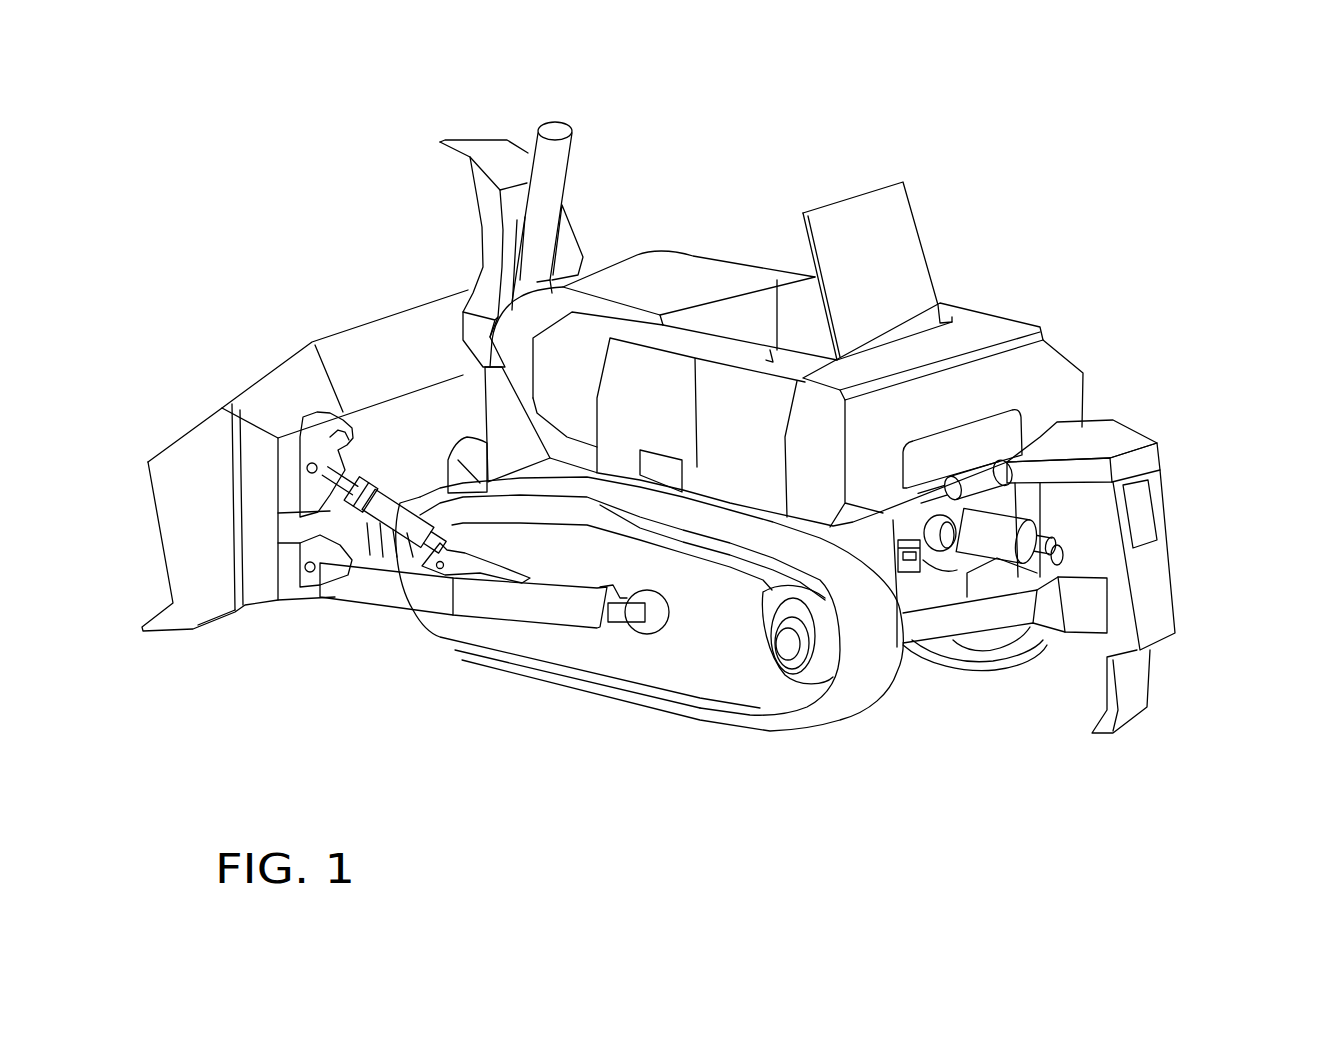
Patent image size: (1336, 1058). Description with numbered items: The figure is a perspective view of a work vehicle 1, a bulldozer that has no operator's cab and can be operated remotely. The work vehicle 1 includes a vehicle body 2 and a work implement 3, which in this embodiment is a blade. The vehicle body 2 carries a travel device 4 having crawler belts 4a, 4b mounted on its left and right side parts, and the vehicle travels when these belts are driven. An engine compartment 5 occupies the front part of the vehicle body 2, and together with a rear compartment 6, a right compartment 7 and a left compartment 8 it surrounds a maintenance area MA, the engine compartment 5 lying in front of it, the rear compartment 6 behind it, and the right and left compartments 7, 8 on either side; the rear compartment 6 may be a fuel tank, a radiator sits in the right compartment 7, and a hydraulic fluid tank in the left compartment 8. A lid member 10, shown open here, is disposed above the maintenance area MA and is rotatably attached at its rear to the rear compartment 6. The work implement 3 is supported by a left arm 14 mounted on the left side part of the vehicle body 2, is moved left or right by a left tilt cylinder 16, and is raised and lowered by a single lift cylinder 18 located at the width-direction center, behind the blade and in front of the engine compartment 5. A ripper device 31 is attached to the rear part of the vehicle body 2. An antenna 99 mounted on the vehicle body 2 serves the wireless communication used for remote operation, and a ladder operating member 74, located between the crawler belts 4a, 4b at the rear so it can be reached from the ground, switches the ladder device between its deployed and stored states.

The work vehicle 1 is at (256, 183).
The vehicle body 2 is at (1092, 336).
The work implement 3 is at (233, 372).
The travel device 4 is at (606, 716).
The crawler belt 4a is at (527, 673).
The crawler belt 4b is at (1045, 648).
The engine compartment 5 is at (645, 270).
The rear compartment 6 is at (1020, 326).
The right compartment 7 is at (968, 306).
The left compartment 8 is at (740, 470).
The lid member 10 is at (868, 195).
The left arm 14 is at (492, 600).
The left tilt cylinder 16 is at (392, 518).
The lift cylinder 18 is at (557, 130).
The ripper device 31 is at (1175, 500).
The ladder operating member 74 is at (908, 575).
The antenna 99 is at (770, 350).
The maintenance area MA is at (790, 318).